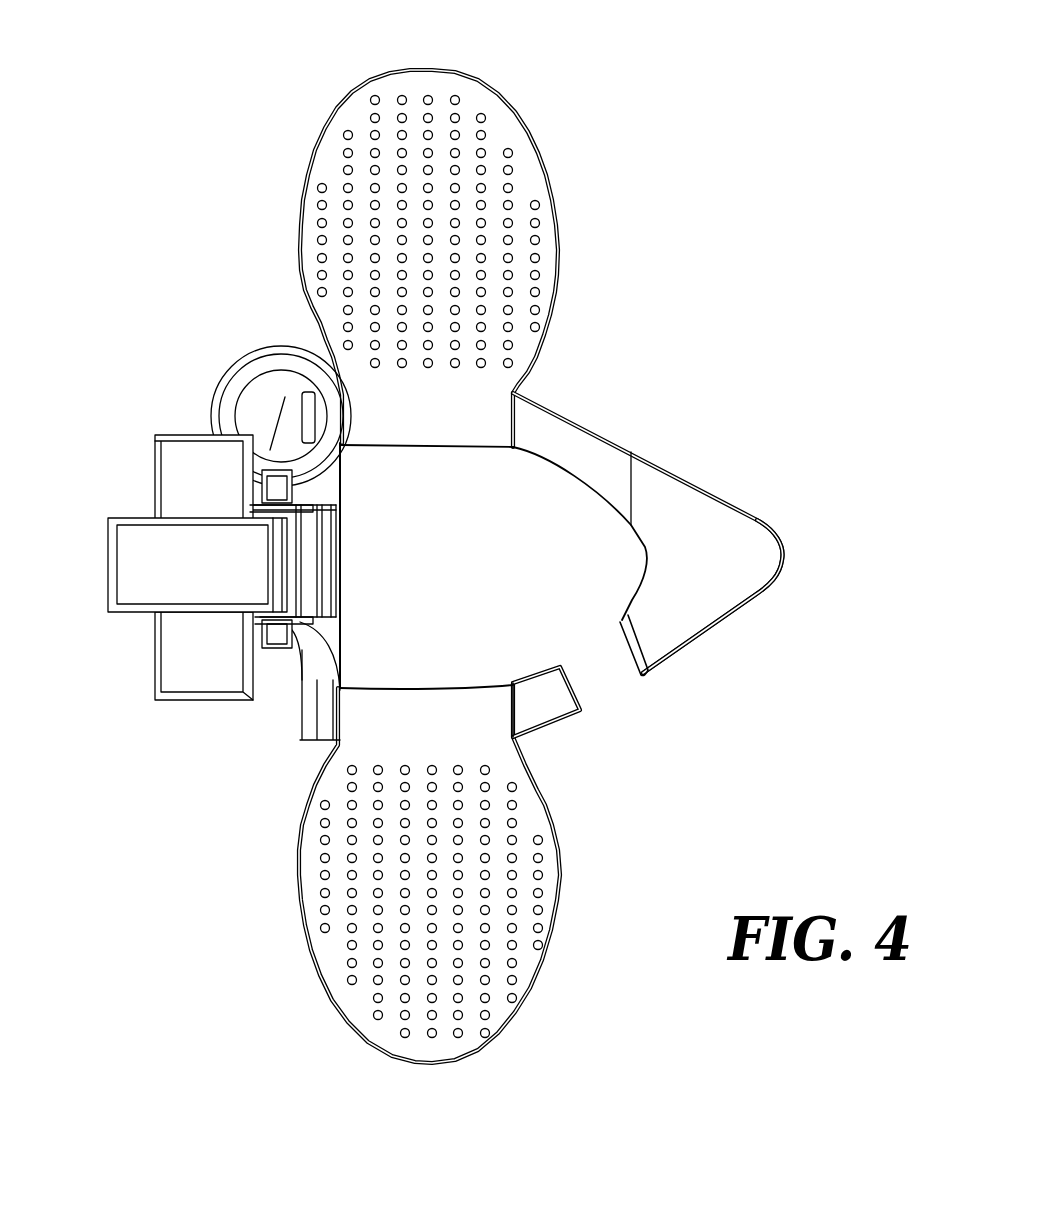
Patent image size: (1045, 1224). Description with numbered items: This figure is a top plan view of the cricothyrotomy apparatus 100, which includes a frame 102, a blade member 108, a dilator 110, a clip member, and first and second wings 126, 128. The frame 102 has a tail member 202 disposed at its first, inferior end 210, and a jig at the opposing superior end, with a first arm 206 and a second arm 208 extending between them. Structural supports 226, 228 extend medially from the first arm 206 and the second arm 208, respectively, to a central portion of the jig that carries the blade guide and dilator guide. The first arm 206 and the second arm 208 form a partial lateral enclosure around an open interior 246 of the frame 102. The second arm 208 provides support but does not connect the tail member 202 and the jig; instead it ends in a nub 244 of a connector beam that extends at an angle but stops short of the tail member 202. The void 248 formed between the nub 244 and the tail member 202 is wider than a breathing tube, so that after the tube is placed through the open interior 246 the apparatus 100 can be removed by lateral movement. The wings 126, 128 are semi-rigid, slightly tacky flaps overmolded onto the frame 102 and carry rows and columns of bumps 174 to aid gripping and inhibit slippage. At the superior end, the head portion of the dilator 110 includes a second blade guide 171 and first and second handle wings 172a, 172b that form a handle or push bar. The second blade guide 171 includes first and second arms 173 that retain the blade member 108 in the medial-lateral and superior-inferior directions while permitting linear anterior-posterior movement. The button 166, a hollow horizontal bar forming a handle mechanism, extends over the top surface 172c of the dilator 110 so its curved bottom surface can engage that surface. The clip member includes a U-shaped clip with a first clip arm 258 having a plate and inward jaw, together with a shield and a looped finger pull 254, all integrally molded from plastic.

The apparatus 100 is at (880, 128).
The frame 102 is at (715, 498).
The blade member 108 is at (159, 536).
The dilator 110 is at (221, 523).
The first wing 126 is at (432, 85).
The second wing 128 is at (475, 1050).
The button 166 is at (197, 565).
The second blade guide 171 is at (320, 507).
The first handle wing 172a is at (165, 700).
The second handle wing 172b is at (192, 432).
The top surface 172c is at (204, 567).
The arms 173 is at (320, 490).
The bumps 174 is at (510, 150).
The tail member 202 is at (715, 600).
The first arm 206 is at (575, 415).
The second arm 208 is at (540, 720).
The first end 210 is at (790, 505).
The structural support 226 is at (287, 440).
The structural support 228 is at (290, 722).
The nub 244 is at (566, 690).
The open interior 246 is at (493, 566).
The void 248 is at (617, 695).
The looped finger pull 254 is at (300, 395).
The first clip arm 258 is at (333, 562).